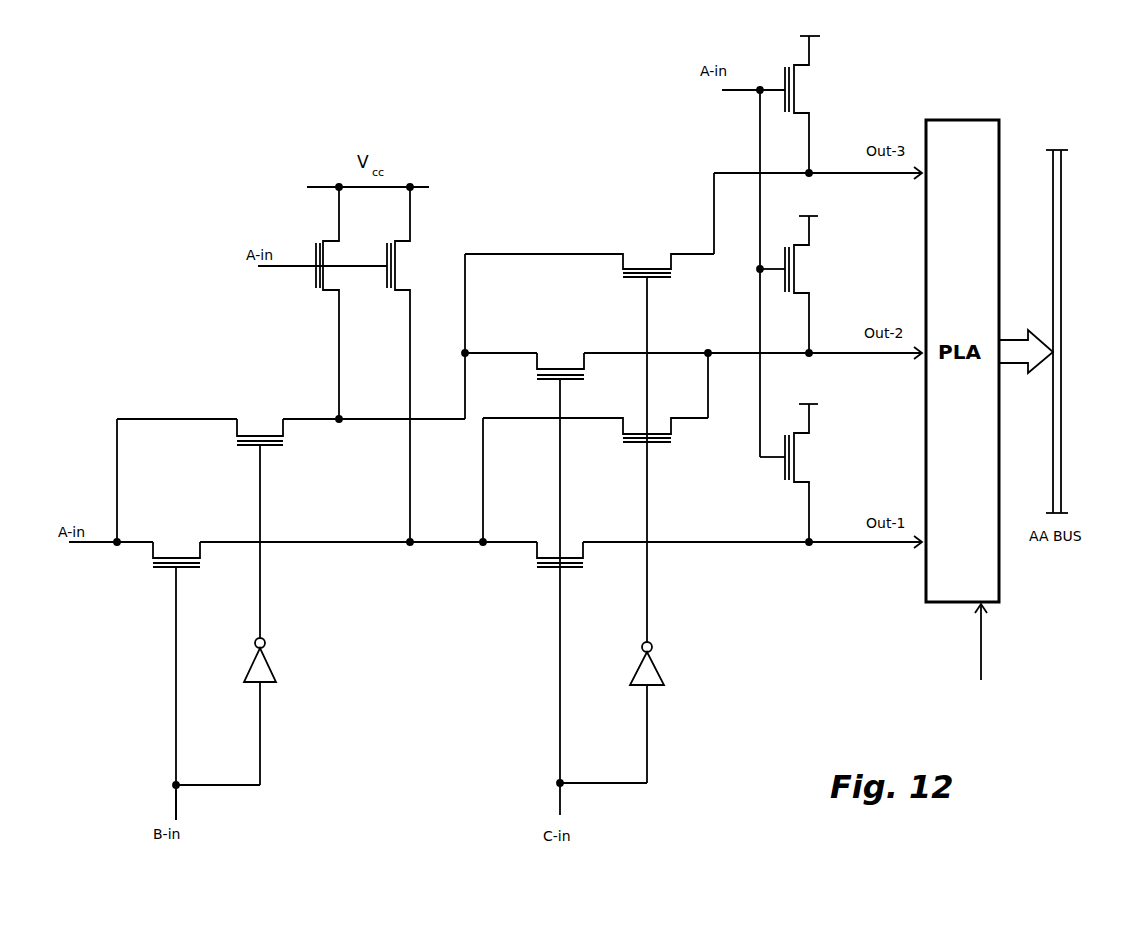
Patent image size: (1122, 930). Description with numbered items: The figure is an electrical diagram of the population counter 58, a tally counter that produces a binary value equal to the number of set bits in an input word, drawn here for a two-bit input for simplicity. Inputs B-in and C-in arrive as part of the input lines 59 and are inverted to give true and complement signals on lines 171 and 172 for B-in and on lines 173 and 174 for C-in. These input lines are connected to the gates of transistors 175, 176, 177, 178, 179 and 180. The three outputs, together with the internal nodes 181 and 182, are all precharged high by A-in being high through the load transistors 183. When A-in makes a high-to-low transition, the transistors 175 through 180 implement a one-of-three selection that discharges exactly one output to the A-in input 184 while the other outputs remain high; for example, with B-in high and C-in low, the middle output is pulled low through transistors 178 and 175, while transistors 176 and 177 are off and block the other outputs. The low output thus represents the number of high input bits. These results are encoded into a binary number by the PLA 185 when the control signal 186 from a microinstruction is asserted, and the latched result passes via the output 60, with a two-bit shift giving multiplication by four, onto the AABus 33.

The population counter 58 is at (502, 152).
The input lines 59 is at (150, 799).
The true B-in line 171 is at (176, 640).
The complement B-in line 172 is at (260, 582).
The true C-in line 173 is at (558, 653).
The complement C-in line 174 is at (648, 605).
The transistor 175 is at (165, 569).
The transistor 176 is at (275, 446).
The transistor 177 is at (550, 568).
The transistor 178 is at (657, 445).
The transistor 179 is at (553, 377).
The transistor 180 is at (657, 279).
The internal node 181 is at (375, 545).
The internal node 182 is at (385, 422).
The transistors 183 is at (313, 280).
The A-in input 184 is at (88, 548).
The PLA 185 is at (974, 128).
The control signal 186 is at (983, 656).
The output 60 is at (1013, 338).
The AABus 33 is at (1063, 410).